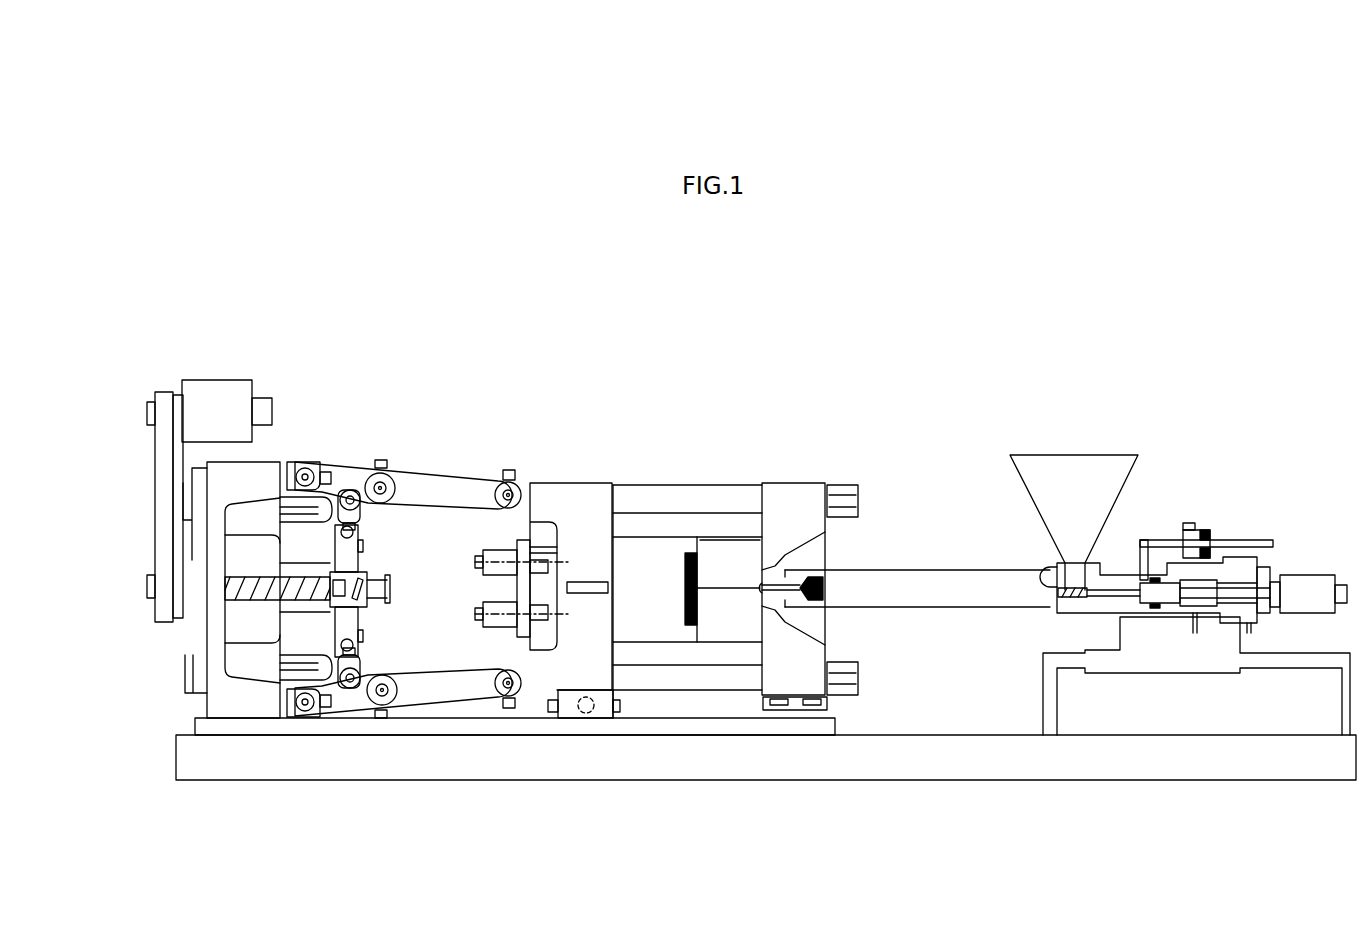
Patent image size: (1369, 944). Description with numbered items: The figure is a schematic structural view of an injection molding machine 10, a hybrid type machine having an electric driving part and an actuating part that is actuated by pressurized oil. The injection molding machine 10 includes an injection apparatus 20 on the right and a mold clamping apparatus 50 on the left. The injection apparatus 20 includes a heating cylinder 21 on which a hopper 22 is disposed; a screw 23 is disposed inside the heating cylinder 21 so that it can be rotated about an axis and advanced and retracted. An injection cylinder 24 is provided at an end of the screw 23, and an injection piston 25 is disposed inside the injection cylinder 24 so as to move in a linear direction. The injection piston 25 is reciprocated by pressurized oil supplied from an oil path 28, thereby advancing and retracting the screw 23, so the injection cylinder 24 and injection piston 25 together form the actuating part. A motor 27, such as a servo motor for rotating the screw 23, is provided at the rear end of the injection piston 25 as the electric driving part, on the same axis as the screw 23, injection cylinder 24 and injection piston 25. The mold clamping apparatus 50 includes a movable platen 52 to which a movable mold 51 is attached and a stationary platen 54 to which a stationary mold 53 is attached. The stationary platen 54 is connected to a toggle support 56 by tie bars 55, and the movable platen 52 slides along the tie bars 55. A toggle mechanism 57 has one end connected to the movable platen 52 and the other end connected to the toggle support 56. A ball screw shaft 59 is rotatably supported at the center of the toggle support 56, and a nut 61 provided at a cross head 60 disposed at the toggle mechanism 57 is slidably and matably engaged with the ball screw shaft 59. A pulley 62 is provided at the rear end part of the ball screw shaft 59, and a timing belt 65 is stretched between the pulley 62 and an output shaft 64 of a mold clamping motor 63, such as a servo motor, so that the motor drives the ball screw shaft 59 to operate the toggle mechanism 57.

The injection molding machine 10 is at (118, 267).
The injection apparatus 20 is at (1031, 387).
The heating cylinder 21 is at (985, 568).
The hopper 22 is at (1073, 456).
The screw 23 is at (1052, 606).
The injection cylinder 24 is at (1110, 563).
The injection piston 25 is at (1157, 575).
The motor 27 is at (1305, 575).
The oil path 28 is at (1200, 630).
The mold clamping apparatus 50 is at (527, 388).
The movable mold 51 is at (663, 535).
The movable platen 52 is at (580, 484).
The stationary mold 53 is at (725, 535).
The stationary platen 54 is at (805, 482).
The tie bars 55 is at (625, 487).
The toggle support 56 is at (207, 702).
The toggle mechanism 57 is at (430, 474).
The ball screw shaft 59 is at (347, 570).
The cross head 60 is at (333, 606).
The nut 61 is at (358, 625).
The pulley 62 is at (153, 620).
The mold clamping motor 63 is at (218, 380).
The output shaft 64 is at (173, 398).
The timing belt 65 is at (157, 504).